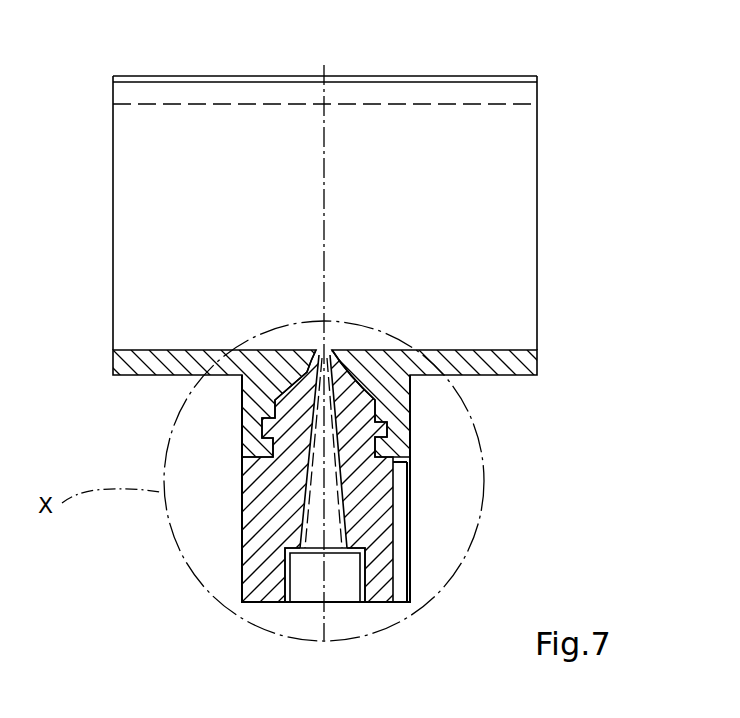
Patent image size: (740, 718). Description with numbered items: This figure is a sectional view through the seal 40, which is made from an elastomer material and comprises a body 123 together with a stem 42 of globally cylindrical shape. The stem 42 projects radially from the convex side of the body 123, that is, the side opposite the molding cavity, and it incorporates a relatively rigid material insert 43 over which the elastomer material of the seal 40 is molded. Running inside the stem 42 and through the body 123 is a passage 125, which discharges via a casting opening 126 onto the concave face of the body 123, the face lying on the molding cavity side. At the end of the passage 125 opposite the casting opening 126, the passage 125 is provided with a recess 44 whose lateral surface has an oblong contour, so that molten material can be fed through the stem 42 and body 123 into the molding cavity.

The seal 40 is at (370, 336).
The body 123 is at (512, 212).
The casting opening 126 is at (323, 353).
The stem 42 is at (422, 533).
The insert 43 is at (328, 436).
The passage 125 is at (316, 542).
The recess 44 is at (337, 583).